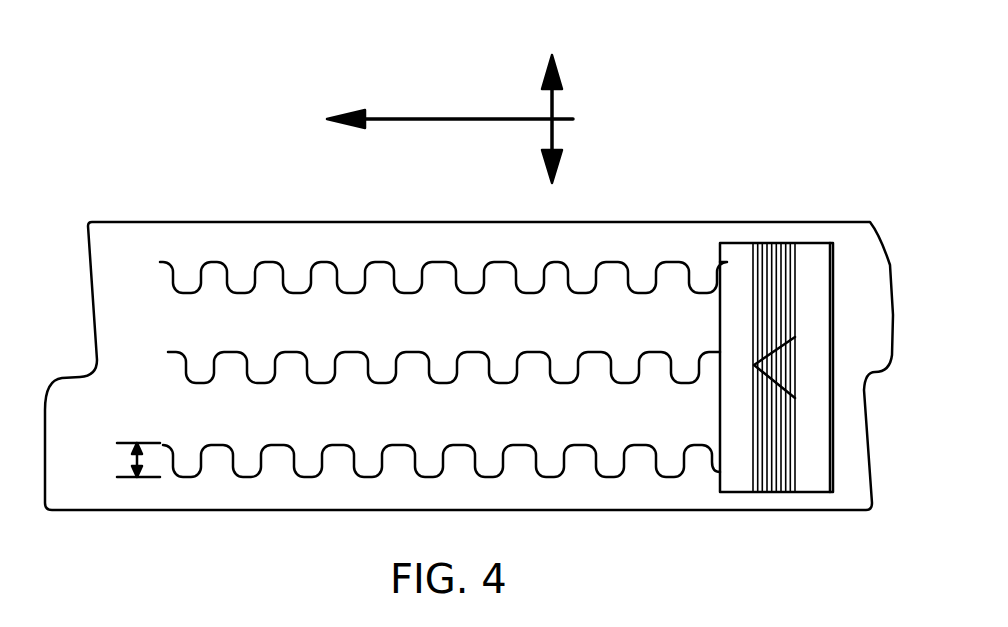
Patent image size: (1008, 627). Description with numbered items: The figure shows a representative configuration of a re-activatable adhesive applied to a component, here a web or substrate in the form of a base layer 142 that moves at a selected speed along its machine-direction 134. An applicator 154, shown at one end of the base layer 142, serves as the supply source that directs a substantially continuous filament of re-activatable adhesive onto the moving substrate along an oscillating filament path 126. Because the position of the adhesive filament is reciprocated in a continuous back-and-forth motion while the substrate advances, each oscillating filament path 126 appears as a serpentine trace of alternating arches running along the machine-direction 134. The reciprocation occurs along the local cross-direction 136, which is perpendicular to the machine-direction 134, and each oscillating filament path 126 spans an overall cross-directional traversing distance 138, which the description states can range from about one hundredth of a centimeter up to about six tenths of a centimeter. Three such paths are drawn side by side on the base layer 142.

The oscillating filament path 126 is at (443, 262).
The machine-direction 134 is at (445, 118).
The cross-direction 136 is at (553, 102).
The cross-directional traversing distance 138 is at (127, 460).
The base layer 142 is at (78, 502).
The applicator 154 is at (812, 488).